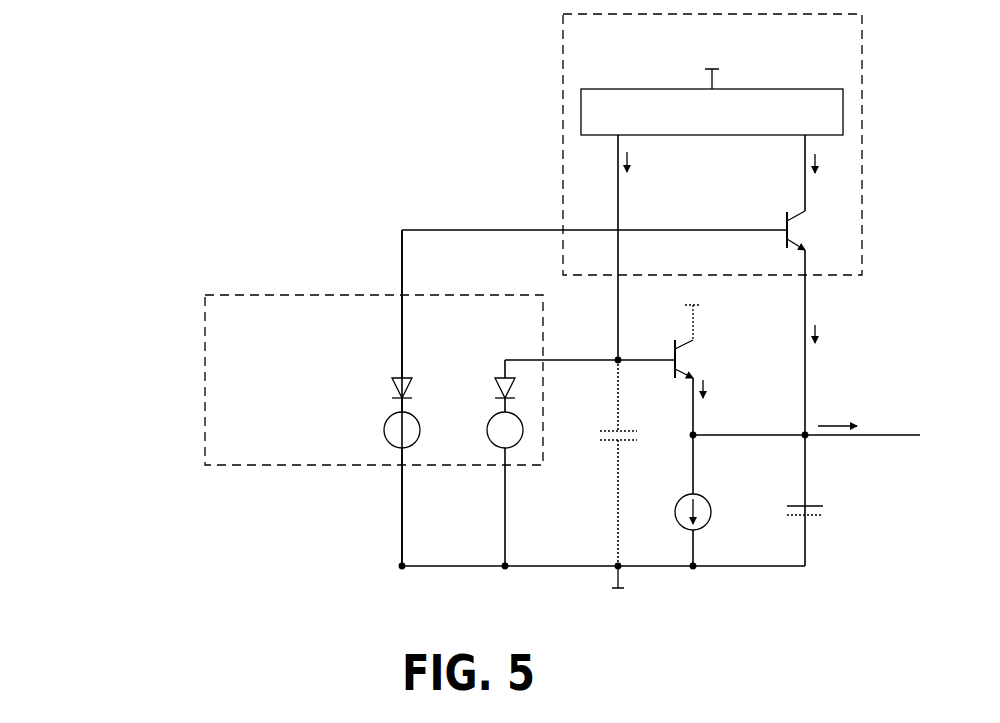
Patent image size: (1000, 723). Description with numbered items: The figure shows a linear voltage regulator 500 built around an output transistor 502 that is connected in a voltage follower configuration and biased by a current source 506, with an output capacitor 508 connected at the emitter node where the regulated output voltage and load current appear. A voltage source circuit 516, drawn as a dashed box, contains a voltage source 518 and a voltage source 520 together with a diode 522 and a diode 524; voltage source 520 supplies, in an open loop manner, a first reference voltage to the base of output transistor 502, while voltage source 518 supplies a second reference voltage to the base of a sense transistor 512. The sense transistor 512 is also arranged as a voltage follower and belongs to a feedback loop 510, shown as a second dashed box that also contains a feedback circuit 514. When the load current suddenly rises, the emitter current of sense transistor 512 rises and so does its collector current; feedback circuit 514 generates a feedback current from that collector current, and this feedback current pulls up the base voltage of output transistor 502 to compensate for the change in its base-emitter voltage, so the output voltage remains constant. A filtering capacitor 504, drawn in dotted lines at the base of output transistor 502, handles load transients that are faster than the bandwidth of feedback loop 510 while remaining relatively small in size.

The linear voltage regulator 500 is at (84, 107).
The output transistor 502 is at (673, 341).
The filtering capacitor 504 is at (601, 431).
The current source 506 is at (680, 524).
The output capacitor 508 is at (818, 506).
The feedback loop 510 is at (828, 276).
The sense transistor 512 is at (798, 218).
The feedback circuit 514 is at (714, 135).
The voltage source circuit 516 is at (205, 338).
The voltage source 518 is at (383, 430).
The voltage source 520 is at (486, 430).
The diode 522 is at (389, 386).
The diode 524 is at (493, 386).